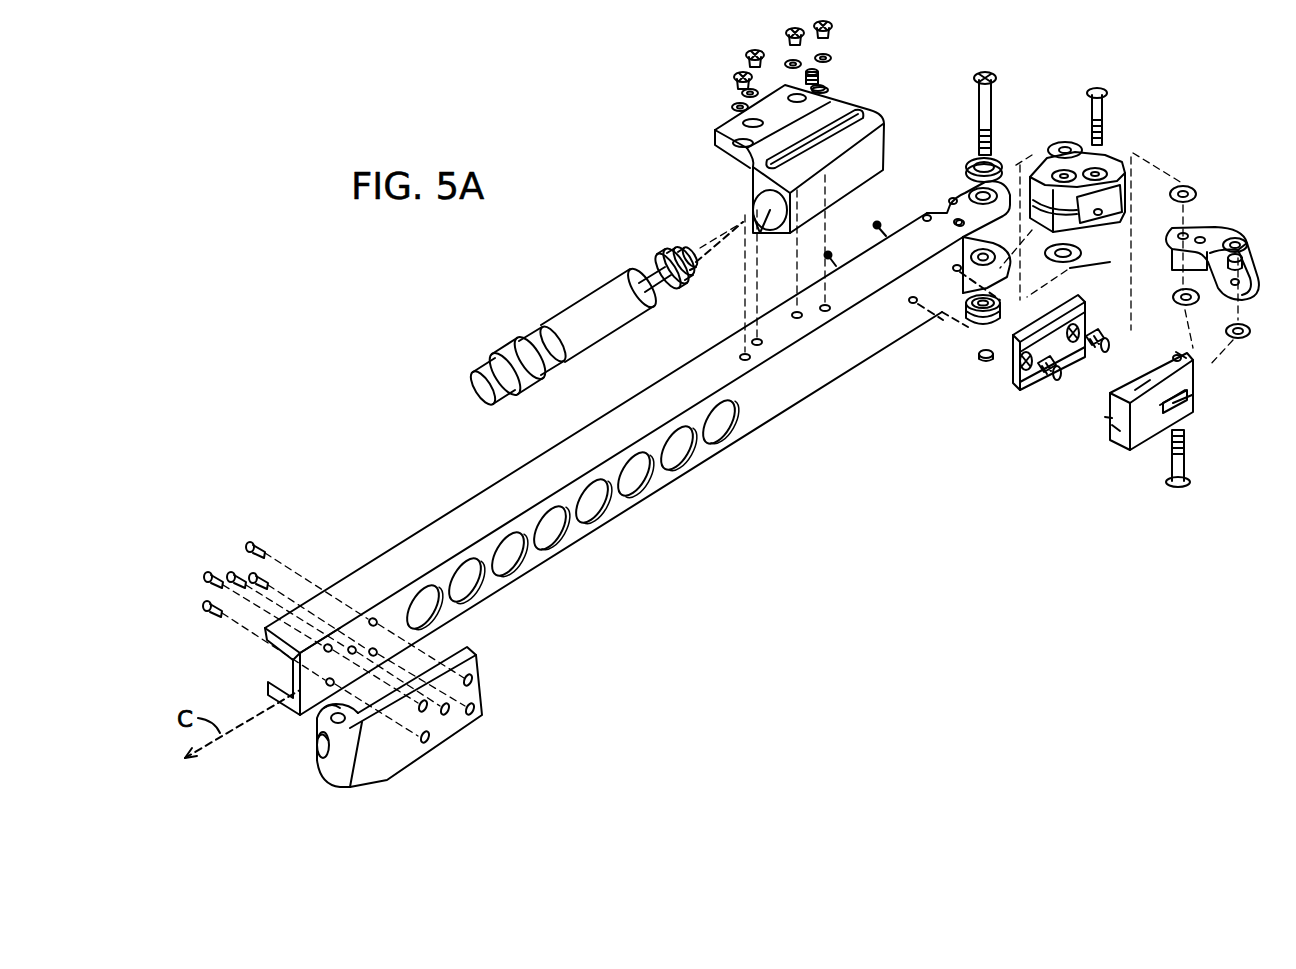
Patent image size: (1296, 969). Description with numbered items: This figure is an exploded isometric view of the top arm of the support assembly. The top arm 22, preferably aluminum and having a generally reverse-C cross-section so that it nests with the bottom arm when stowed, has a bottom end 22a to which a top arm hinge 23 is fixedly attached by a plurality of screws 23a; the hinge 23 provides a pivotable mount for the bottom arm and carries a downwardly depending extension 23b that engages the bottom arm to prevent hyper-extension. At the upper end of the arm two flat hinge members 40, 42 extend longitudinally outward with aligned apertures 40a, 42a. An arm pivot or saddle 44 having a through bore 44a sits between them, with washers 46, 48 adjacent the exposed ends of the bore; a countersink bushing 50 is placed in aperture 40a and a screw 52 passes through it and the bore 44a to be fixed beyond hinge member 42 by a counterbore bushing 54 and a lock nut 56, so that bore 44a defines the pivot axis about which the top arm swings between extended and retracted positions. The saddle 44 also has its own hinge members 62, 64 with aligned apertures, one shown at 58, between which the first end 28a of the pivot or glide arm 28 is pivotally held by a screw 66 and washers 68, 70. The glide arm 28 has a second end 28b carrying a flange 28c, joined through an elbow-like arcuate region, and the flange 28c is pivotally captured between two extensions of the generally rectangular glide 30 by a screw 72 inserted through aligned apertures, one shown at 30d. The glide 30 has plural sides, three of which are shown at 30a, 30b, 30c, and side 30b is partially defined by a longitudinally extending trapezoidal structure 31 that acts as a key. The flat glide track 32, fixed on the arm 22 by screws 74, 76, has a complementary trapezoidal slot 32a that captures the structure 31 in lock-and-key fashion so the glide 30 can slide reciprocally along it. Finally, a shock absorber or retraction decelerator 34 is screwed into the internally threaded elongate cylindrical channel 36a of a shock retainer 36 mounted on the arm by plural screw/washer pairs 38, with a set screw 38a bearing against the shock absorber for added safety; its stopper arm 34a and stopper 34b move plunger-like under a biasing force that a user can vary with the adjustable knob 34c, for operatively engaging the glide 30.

The top arm 22 is at (579, 452).
The bottom end 22a is at (317, 610).
The top arm hinge 23 is at (410, 752).
The screws 23a is at (234, 551).
The extension 23b is at (360, 788).
The pivot or glide arm 28 is at (1218, 213).
The first end 28a is at (1170, 248).
The second end 28b is at (1245, 250).
The flange 28c is at (1255, 280).
The glide 30 is at (1151, 460).
The side 30a is at (1190, 410).
The side 30b is at (1120, 428).
The side 30c is at (1140, 378).
The aperture 30d is at (1183, 350).
The trapezoidal structure 31 is at (1098, 424).
The glide track 32 is at (1012, 380).
The trapezoidal slot 32a is at (1040, 388).
The shock absorber 34 is at (555, 300).
The stopper arm 34a is at (650, 268).
The stopper 34b is at (690, 270).
The adjustable knob 34c is at (486, 358).
The shock retainer 36 is at (889, 113).
The elongate cylindrical channel 36a is at (758, 209).
The screw/washer pairs 38 is at (822, 20).
The set screw 38a is at (820, 78).
The hinge member 40 is at (1003, 185).
The aperture 40a is at (965, 186).
The hinge member 42 is at (957, 288).
The aperture 42a is at (958, 236).
The arm pivot or saddle 44 is at (1120, 165).
The bore 44a is at (1066, 170).
The washer 46 is at (1056, 145).
The washer 48 is at (1078, 254).
The countersink bushing 50 is at (973, 160).
The screw 52 is at (980, 100).
The counterbore bushing 54 is at (975, 320).
The lock nut 56 is at (984, 362).
The aperture 58 is at (1098, 165).
The hinge member 62 is at (1120, 150).
The hinge member 64 is at (1120, 213).
The screw 66 is at (1097, 88).
The washer 68 is at (1187, 185).
The washer 70 is at (1184, 290).
The screw 72 is at (1190, 485).
The screw 74 is at (1056, 384).
The screw 76 is at (1110, 354).